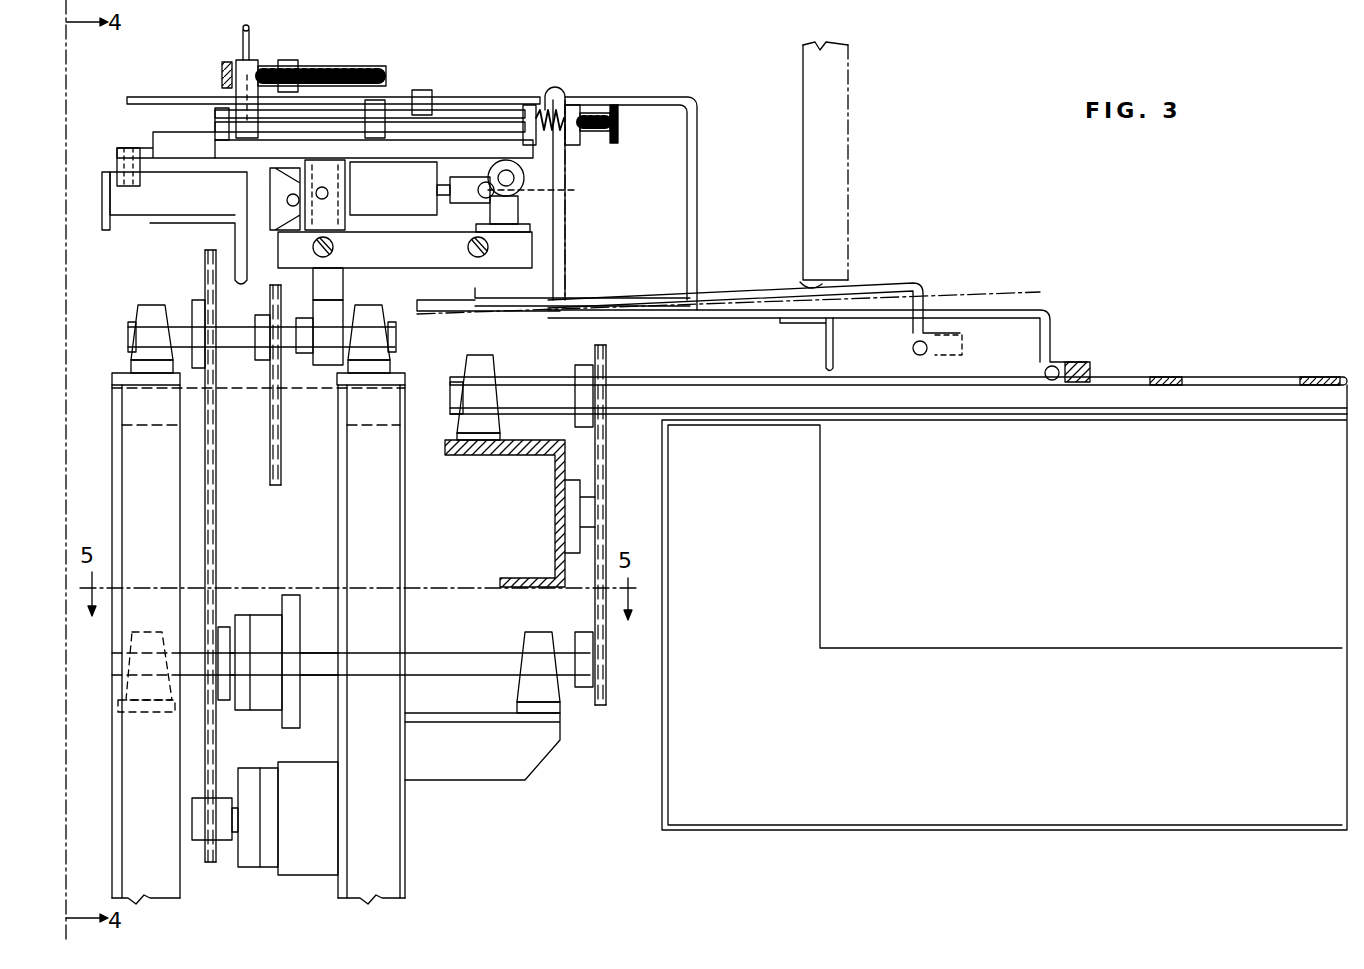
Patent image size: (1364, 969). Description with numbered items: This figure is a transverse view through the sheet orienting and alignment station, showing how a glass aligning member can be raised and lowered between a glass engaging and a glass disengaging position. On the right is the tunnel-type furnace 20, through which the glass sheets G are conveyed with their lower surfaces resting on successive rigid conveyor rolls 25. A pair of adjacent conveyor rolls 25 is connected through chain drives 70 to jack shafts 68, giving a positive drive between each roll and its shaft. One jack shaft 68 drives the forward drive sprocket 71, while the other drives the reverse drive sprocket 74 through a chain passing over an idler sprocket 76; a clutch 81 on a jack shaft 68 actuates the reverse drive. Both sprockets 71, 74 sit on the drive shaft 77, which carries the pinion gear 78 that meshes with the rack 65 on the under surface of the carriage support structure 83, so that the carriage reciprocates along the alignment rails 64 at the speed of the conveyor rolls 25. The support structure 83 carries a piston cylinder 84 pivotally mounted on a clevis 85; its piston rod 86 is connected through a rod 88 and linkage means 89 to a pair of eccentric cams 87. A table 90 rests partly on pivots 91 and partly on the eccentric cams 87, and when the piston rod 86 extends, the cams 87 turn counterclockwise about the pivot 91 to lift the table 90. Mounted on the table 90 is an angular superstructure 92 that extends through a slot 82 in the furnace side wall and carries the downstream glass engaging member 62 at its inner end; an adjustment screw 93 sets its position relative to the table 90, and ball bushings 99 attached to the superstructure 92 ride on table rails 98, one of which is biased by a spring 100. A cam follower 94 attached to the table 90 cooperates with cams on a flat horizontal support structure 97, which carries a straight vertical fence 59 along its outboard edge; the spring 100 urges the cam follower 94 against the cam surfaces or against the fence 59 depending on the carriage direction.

The furnace 20 is at (798, 180).
The rigid conveyor rolls 25 is at (994, 405).
The vertical fence 59 is at (108, 192).
The downstream glass engaging member 62 is at (938, 290).
The alignment rails 64 is at (468, 247).
The rack 65 is at (334, 284).
The jack shafts 68 is at (432, 660).
The chain drives 70 is at (607, 494).
The forward drive sprocket 71 is at (196, 302).
The reverse drive sprocket 74 is at (262, 358).
The idler sprocket 76 is at (212, 862).
The drive shaft 77 is at (234, 330).
The pinion gear 78 is at (328, 366).
The clutch 81 is at (262, 712).
The slot 82 is at (798, 288).
The support structure 83 is at (420, 268).
The piston cylinder 84 is at (393, 188).
The clevis 85 is at (286, 200).
The piston rod 86 is at (440, 198).
The eccentric cams 87 is at (522, 172).
The rod 88 is at (505, 197).
The linkage means 89 is at (544, 191).
The table 90 is at (455, 150).
The pivots 91 is at (330, 195).
The superstructure 92 is at (393, 96).
The adjustment screw 93 is at (300, 68).
The cam follower 94 is at (141, 180).
The horizontal support structure 97 is at (162, 210).
The table rails 98 is at (440, 122).
The ball bushings 99 is at (226, 112).
The spring 100 is at (542, 100).
The glass sheets G is at (1258, 372).